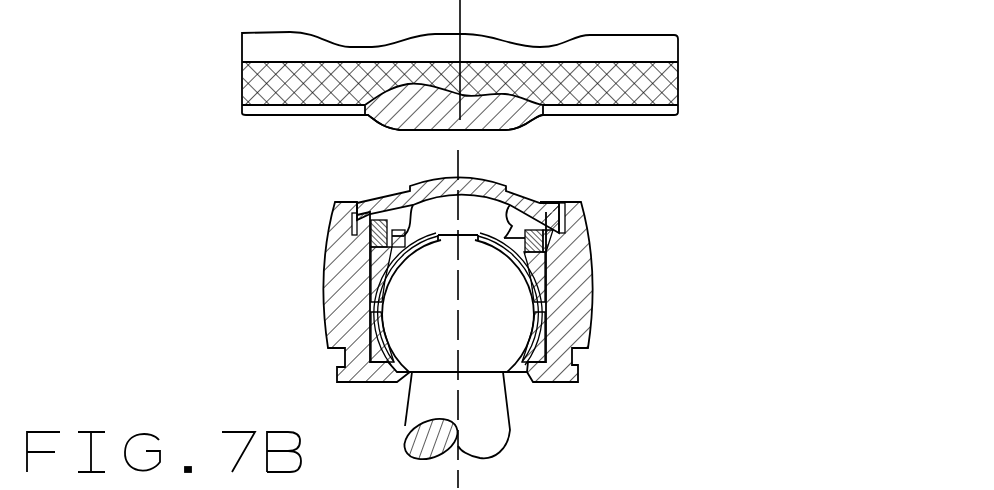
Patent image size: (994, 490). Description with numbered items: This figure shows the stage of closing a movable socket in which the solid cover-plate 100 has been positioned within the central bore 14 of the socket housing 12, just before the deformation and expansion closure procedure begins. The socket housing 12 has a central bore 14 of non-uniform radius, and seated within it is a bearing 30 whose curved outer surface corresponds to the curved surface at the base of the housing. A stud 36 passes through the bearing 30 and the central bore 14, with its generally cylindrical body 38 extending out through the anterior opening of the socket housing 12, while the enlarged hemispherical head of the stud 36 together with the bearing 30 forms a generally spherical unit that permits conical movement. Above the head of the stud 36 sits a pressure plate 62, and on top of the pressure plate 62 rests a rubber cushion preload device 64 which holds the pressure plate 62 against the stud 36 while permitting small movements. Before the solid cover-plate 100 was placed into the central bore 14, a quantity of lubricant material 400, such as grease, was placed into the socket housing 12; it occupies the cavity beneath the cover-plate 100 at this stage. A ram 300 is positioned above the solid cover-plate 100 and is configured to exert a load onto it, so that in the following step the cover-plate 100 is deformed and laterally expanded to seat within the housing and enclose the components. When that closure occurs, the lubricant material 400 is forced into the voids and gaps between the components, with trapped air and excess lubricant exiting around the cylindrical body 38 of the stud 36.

The ram 300 is at (665, 50).
The solid cover-plate 100 is at (395, 193).
The lubricant material 400 is at (413, 217).
The socket housing 12 is at (590, 222).
The central bore 14 is at (370, 292).
The rubber cushion preload device 64 is at (545, 248).
The pressure plate 62 is at (545, 276).
The bearing 30 is at (545, 330).
The stud 36 is at (412, 335).
The cylindrical body 38 is at (430, 400).